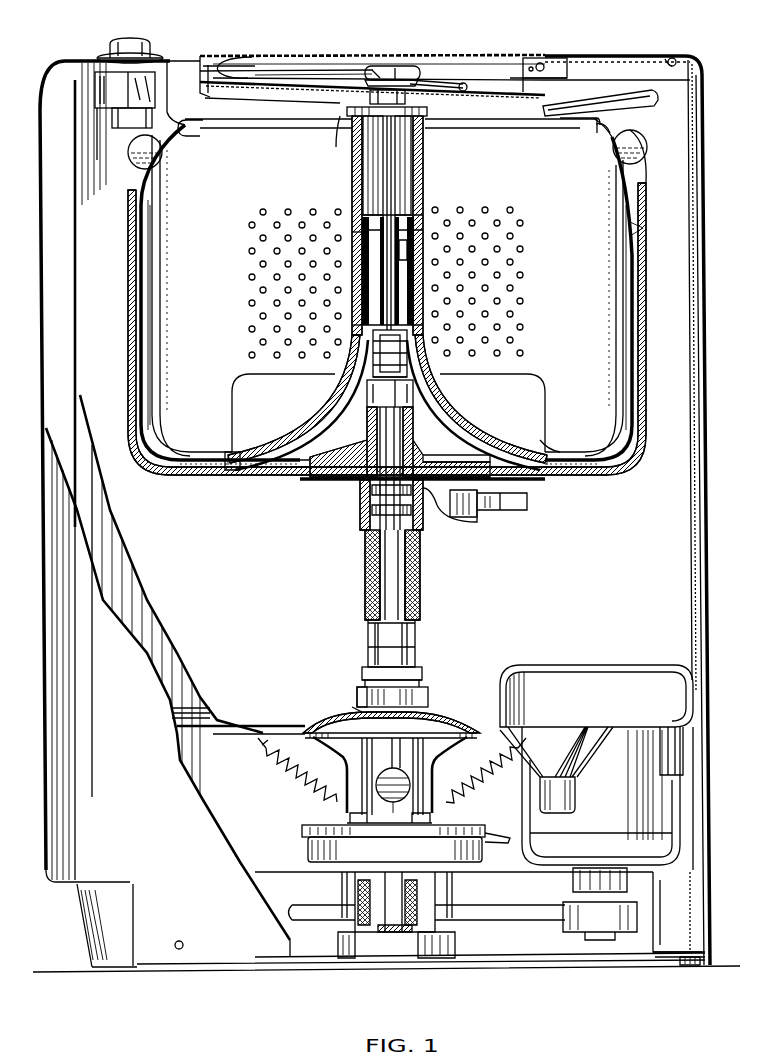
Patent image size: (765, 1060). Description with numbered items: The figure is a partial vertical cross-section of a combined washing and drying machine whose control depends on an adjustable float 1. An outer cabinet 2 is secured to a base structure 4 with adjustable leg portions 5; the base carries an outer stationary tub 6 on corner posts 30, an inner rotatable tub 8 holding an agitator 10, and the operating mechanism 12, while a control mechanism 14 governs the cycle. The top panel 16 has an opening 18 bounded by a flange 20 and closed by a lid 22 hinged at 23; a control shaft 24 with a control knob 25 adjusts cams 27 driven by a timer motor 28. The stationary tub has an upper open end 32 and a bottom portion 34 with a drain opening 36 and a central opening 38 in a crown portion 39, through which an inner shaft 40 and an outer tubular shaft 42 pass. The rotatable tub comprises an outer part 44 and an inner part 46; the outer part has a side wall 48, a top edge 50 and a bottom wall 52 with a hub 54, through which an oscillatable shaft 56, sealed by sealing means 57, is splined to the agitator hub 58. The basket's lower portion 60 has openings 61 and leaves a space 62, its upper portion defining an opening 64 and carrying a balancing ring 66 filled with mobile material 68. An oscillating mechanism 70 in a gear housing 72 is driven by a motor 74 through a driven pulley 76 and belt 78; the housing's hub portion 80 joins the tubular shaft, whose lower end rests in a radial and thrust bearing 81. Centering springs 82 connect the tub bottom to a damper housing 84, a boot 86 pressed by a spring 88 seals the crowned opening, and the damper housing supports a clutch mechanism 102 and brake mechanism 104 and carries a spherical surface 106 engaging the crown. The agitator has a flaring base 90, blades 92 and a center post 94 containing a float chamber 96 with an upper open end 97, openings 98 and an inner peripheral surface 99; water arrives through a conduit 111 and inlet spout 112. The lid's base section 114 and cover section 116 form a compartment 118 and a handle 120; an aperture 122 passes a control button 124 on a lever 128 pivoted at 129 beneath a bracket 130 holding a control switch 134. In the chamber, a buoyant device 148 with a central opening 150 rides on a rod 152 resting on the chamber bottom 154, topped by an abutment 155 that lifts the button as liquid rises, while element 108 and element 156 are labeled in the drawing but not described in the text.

The adjustable float 1 is at (428, 245).
The outer cabinet 2 is at (42, 380).
The base structure 4 is at (660, 957).
The adjustable leg portions 5 is at (684, 966).
The outer stationary tub 6 is at (75, 334).
The inner rotatable tub 8 is at (176, 474).
The agitator 10 is at (232, 392).
The operating mechanism 12 is at (537, 897).
The control mechanism 14 is at (428, 76).
The top panel 16 is at (608, 57).
The opening 18 is at (200, 77).
The flange 20 is at (572, 96).
The lid 22 is at (258, 72).
The hinge 23 is at (537, 57).
The control shaft 24 is at (105, 56).
The control knob 25 is at (134, 45).
The cams 27 is at (115, 89).
The timer motor 28 is at (117, 115).
The corner posts 30 is at (690, 907).
The upper open end 32 is at (668, 57).
The bottom portion 34 is at (275, 727).
The drain opening 36 is at (572, 762).
The central opening 38 is at (358, 705).
The crown portion 39 is at (345, 722).
The inner shaft 40 is at (398, 612).
The outer tubular shaft 42 is at (415, 603).
The outer part 44 is at (133, 325).
The inner part 46 is at (139, 279).
The side wall 48 is at (136, 370).
The top edge 50 is at (648, 184).
The bottom wall 52 is at (230, 470).
The hub 54 is at (312, 477).
The oscillatable shaft 56 is at (380, 425).
The sealing means 57 is at (372, 398).
The agitator hub 58 is at (404, 356).
The lower portion 60 is at (152, 320).
The openings 61 is at (275, 232).
The space 62 is at (137, 430).
The opening 64 is at (218, 129).
The balancing ring 66 is at (643, 136).
The mobile material 68 is at (647, 151).
The oscillating mechanism 70 is at (445, 520).
The gear housing 72 is at (490, 510).
The motor 74 is at (660, 812).
The driven pulley 76 is at (285, 955).
The belt 78 is at (528, 957).
The hub portion 80 is at (365, 560).
The radial and thrust bearing 81 is at (418, 932).
The centering springs 82 is at (290, 768).
The damper housing 84 is at (352, 760).
The seal boot 86 is at (420, 678).
The spring 88 is at (420, 700).
The flaring base 90 is at (545, 438).
The blades 92 is at (542, 380).
The center post 94 is at (350, 272).
The float chamber 96 is at (374, 173).
The upper open end 97 is at (357, 150).
The openings 98 is at (430, 312).
The inner peripheral surface 99 is at (410, 176).
The clutch mechanism 102 is at (337, 800).
The brake mechanism 104 is at (308, 850).
The spherical surface 106 is at (465, 728).
The flange 108 is at (330, 730).
The conduit 111 is at (695, 750).
The inlet spout 112 is at (567, 118).
The base section 114 is at (262, 100).
The cover section 116 is at (306, 62).
The compartment 118 is at (350, 66).
The handle 120 is at (232, 68).
The aperture 122 is at (370, 96).
The control button 124 is at (350, 104).
The lever 128 is at (448, 80).
The pivot end 129 is at (470, 84).
The bracket 130 is at (378, 68).
The control switch 134 is at (405, 70).
The buoyant device 148 is at (425, 282).
The central opening 150 is at (428, 260).
The rod 152 is at (392, 205).
The bottom of chamber 154 is at (352, 322).
The abutment 155 is at (345, 118).
The water line 156 is at (352, 232).